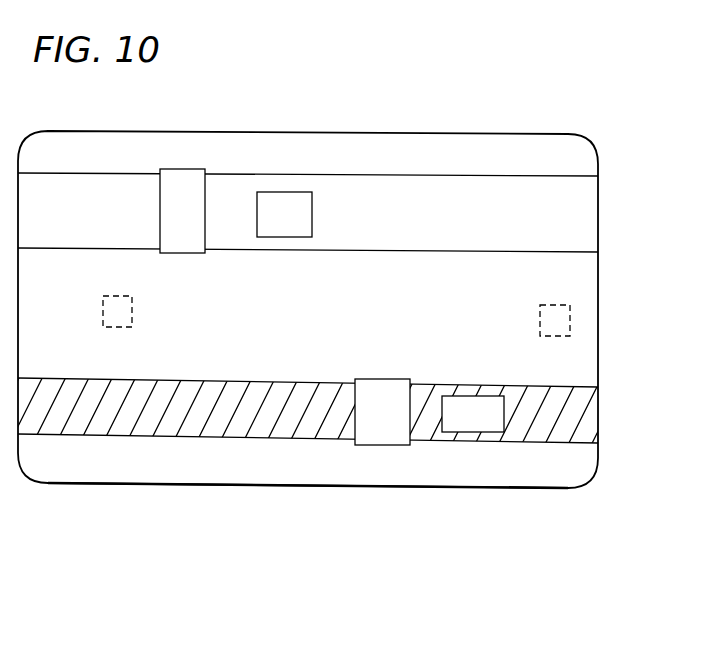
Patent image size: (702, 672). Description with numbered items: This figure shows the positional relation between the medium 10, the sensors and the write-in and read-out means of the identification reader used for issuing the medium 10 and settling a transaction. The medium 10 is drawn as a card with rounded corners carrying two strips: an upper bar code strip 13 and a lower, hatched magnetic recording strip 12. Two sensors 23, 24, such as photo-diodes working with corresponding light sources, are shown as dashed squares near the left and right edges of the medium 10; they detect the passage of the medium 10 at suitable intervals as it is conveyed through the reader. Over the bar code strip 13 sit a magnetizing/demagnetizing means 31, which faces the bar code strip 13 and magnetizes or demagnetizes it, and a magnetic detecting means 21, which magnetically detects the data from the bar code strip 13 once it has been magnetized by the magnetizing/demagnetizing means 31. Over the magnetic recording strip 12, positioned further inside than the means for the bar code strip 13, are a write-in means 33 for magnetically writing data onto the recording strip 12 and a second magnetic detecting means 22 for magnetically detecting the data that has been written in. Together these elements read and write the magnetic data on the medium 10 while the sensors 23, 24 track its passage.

The medium 10 is at (437, 126).
The magnetic recording strip 12 is at (110, 436).
The bar code strip 13 is at (598, 218).
The magnetic detecting means 21 is at (284, 192).
The magnetic detecting means 22 is at (490, 433).
The sensor 23 is at (104, 298).
The sensor 24 is at (571, 320).
The magnetizing/demagnetizing means 31 is at (192, 169).
The write-in means 33 is at (372, 445).